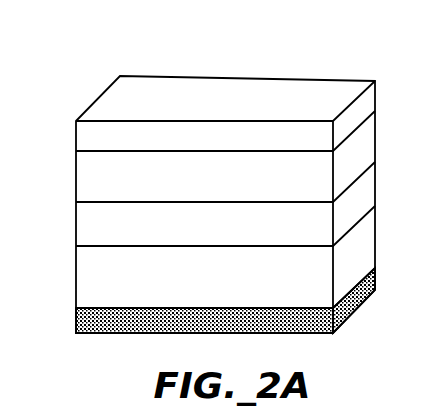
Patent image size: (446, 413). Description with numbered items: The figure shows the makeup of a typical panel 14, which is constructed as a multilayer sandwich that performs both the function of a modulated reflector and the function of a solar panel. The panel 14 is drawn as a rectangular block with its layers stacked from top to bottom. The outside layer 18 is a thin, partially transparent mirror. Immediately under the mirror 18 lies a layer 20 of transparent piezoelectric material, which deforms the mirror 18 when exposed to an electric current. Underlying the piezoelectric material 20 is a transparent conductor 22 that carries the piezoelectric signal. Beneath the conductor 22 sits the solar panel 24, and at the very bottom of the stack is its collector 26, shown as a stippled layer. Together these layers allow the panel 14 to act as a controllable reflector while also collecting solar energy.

The panel 14 is at (300, 57).
The outside layer 18 is at (75, 141).
The layer of transparent piezoelectric material 20 is at (75, 174).
The transparent conductor 22 is at (75, 217).
The solar panel 24 is at (75, 269).
The collector 26 is at (75, 317).